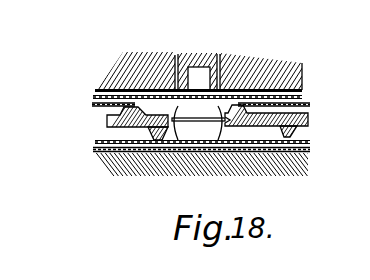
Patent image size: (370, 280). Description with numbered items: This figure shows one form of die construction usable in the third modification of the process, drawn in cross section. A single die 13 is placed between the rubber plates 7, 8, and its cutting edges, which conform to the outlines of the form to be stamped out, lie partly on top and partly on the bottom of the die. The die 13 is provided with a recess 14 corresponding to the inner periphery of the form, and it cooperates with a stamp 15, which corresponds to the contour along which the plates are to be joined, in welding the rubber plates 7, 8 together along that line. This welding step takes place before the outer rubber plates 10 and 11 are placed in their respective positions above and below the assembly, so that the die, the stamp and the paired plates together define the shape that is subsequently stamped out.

The stamp 15 is at (178, 83).
The rubber plate 11 is at (97, 90).
The rubber plate 7 is at (93, 98).
The single die 13 is at (107, 120).
The rubber plate 8 is at (95, 143).
The rubber plate 10 is at (97, 150).
The recess 14 is at (152, 129).